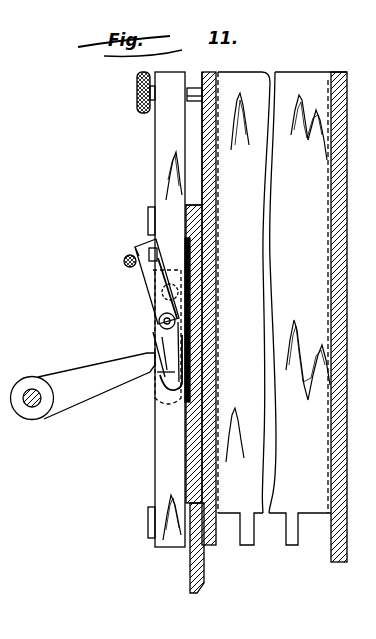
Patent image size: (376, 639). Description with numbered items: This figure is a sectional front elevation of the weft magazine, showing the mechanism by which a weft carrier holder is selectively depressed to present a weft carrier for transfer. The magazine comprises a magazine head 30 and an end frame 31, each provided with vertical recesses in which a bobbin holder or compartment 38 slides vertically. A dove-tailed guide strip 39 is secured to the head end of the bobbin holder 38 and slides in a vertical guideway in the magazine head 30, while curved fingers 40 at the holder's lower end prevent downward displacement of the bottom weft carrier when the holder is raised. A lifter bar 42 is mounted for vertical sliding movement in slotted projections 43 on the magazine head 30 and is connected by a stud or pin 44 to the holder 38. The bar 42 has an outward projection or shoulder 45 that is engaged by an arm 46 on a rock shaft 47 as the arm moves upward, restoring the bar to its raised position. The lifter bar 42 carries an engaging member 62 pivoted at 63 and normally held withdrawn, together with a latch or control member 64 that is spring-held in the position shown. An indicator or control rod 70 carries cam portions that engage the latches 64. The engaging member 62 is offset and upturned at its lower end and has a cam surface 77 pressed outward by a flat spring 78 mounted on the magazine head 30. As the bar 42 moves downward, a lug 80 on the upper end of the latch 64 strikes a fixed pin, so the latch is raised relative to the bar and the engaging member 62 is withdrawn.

The magazine head 30 is at (204, 580).
The magazine end frame 31 is at (347, 401).
The bobbin holder 38 is at (316, 85).
The dove-tailed guide strip 39 is at (221, 74).
The curved fingers 40 is at (288, 528).
The lifter bar 42 is at (165, 131).
The slotted projections 43 is at (148, 222).
The stud or pin 44 is at (193, 89).
The outward projection or shoulder 45 is at (158, 352).
The arm 46 is at (73, 378).
The rock shaft 47 is at (33, 407).
The engaging member 62 is at (153, 386).
The pivot 63 is at (166, 250).
The latch or control member 64 is at (150, 283).
The indicator or control rod 70 is at (124, 261).
The cam surface 77 is at (217, 341).
The flat spring 78 is at (205, 309).
The lug 80 is at (137, 248).